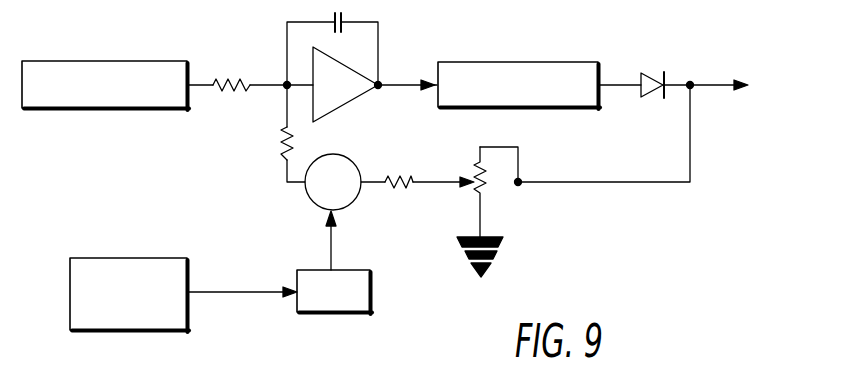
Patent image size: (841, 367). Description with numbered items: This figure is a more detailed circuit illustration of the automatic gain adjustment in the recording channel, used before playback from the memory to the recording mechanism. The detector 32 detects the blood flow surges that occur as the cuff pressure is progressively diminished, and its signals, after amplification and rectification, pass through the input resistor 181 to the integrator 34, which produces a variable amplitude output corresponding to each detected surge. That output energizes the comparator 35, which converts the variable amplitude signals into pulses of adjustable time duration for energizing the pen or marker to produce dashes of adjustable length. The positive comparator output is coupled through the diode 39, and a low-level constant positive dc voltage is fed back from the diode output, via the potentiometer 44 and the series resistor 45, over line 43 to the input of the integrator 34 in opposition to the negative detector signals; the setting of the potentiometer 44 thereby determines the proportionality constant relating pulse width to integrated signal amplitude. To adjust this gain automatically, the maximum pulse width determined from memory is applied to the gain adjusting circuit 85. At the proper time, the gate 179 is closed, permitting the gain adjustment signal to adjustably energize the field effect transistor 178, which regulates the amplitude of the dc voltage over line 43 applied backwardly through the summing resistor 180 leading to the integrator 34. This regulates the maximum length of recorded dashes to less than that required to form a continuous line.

The detector 32 is at (115, 61).
The resistor 181 is at (239, 78).
The integrator 34 is at (342, 100).
The comparator 35 is at (486, 62).
The diode 39 is at (649, 73).
The summing resistor 180 is at (280, 146).
The field effect transistor 178 is at (376, 163).
The line 43 is at (359, 191).
The series resistor 45 is at (416, 176).
The potentiometer 44 is at (486, 191).
The gain adjusting circuit 85 is at (188, 268).
The gate 179 is at (297, 272).